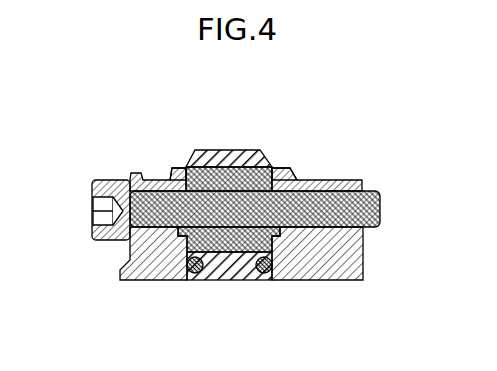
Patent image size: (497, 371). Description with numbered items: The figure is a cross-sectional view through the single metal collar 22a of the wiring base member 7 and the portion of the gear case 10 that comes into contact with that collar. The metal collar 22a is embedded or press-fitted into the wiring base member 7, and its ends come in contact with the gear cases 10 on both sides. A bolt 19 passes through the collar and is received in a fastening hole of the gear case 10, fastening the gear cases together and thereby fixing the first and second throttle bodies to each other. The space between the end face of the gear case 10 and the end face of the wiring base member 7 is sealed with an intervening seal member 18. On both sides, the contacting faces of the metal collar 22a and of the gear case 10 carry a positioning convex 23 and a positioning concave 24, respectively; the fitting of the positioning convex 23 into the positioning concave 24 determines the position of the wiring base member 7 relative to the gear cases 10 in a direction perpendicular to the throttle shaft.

The wiring base member 7 is at (240, 148).
The gear case 10 is at (130, 257).
The seal member 18 is at (262, 282).
The bolt 19 is at (103, 180).
The metal collar 22a is at (219, 149).
The positioning convex 23 is at (170, 172).
The positioning concave 24 is at (190, 158).